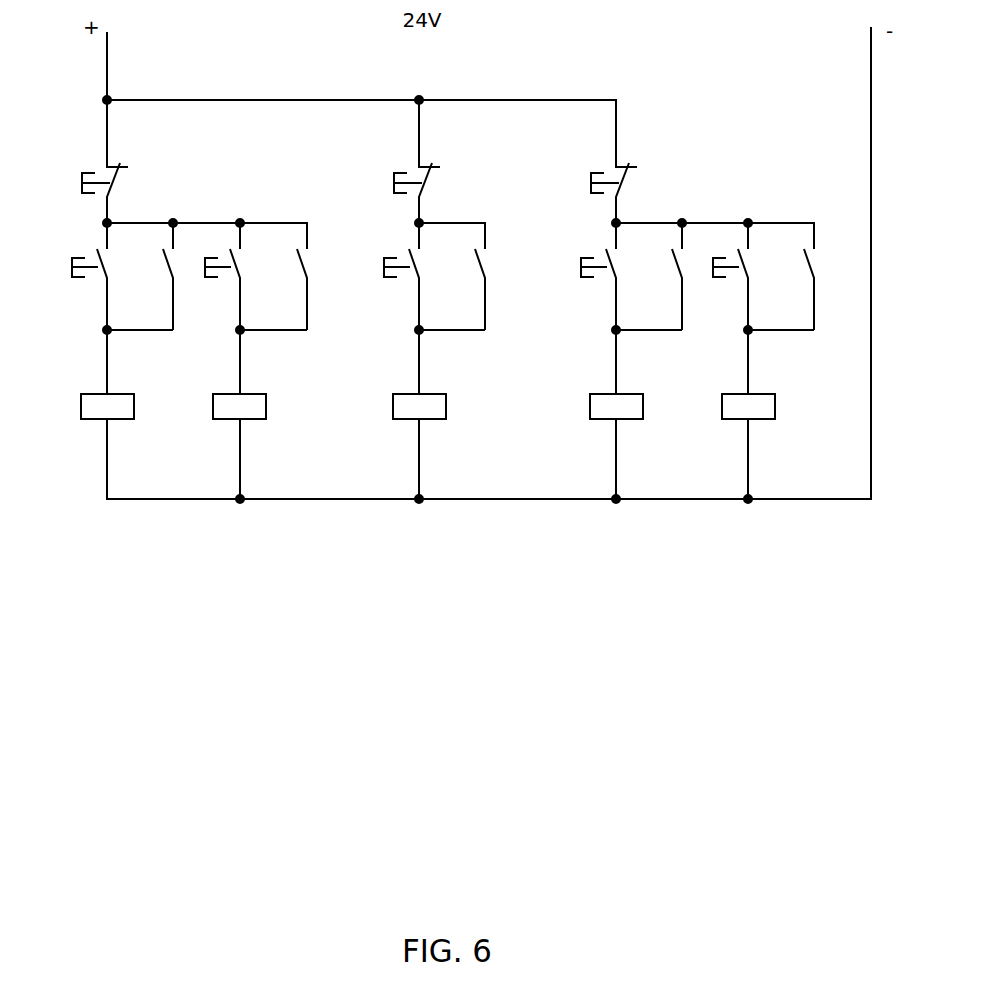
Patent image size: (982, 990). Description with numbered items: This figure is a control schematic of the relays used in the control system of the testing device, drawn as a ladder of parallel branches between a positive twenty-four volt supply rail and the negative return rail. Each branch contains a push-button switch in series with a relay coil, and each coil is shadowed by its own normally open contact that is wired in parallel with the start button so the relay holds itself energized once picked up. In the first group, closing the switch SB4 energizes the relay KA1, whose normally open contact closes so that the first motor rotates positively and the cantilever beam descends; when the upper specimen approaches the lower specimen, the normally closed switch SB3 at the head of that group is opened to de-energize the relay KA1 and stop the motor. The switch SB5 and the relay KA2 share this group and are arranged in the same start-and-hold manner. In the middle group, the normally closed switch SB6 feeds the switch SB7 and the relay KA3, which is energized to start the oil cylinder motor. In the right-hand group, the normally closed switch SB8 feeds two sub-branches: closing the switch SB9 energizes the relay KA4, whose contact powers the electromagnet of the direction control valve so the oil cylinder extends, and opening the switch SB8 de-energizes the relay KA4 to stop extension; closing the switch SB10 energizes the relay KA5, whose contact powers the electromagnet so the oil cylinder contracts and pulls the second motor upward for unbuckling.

The normally closed switch SB3 is at (80, 161).
The switch SB4 is at (67, 276).
The switch SB5 is at (216, 276).
The switch SB6 is at (391, 161).
The switch SB7 is at (379, 276).
The normally closed switch SB8 is at (588, 161).
The switch SB9 is at (576, 276).
The switch SB10 is at (720, 276).
The relay KA1 is at (99, 321).
The relay KA2 is at (233, 321).
The relay KA3 is at (412, 321).
The relay KA4 is at (608, 321).
The relay KA5 is at (743, 321).